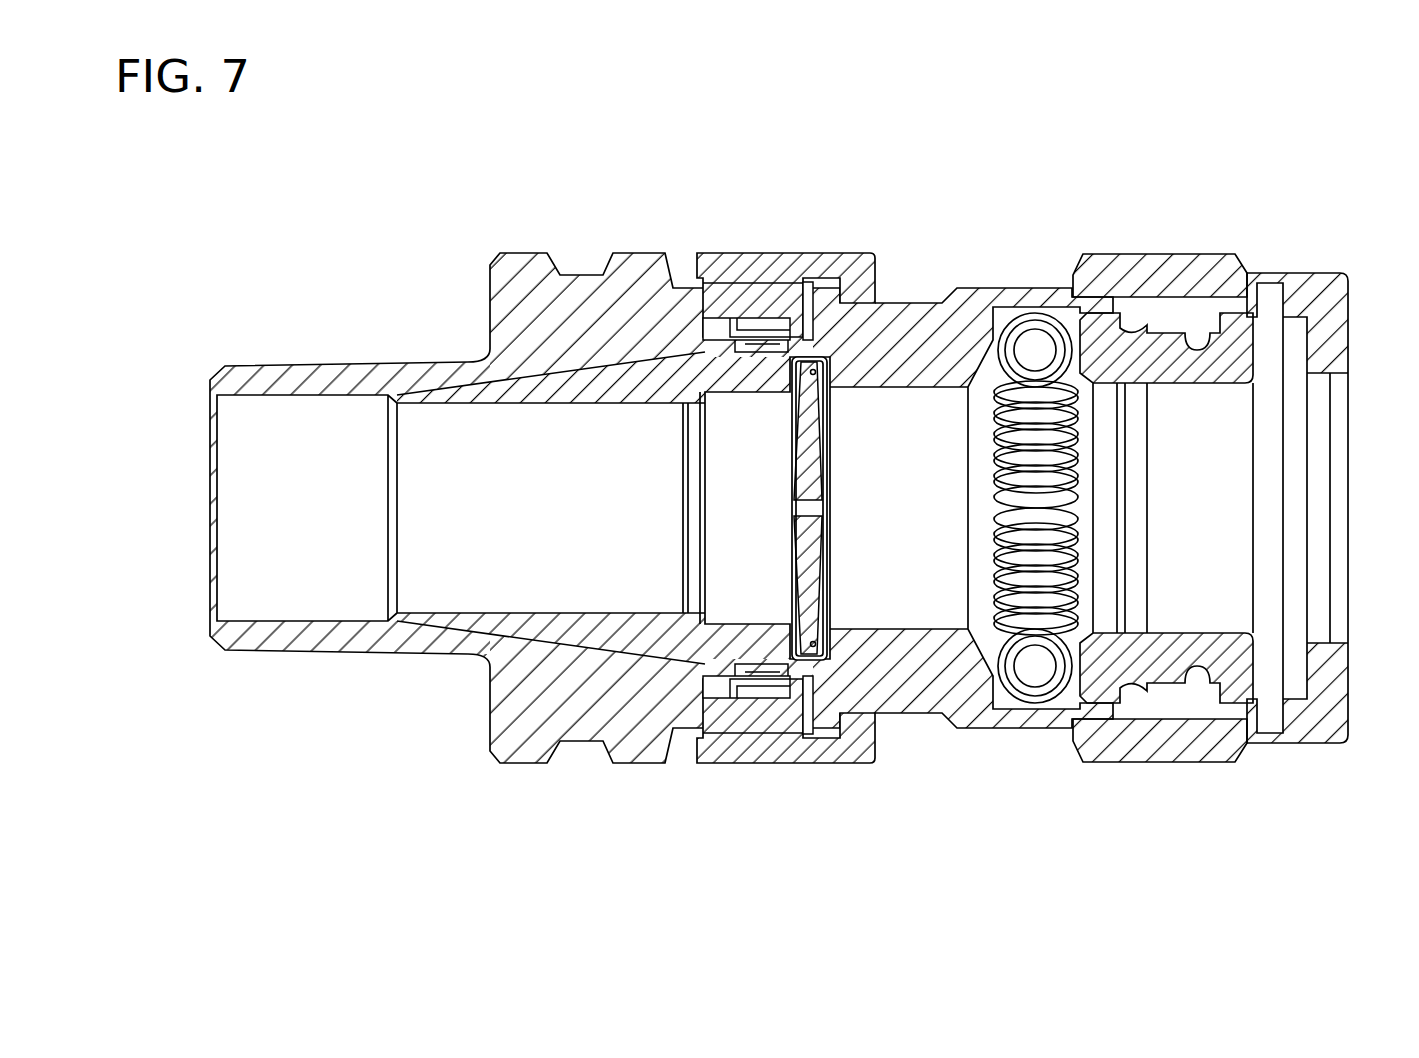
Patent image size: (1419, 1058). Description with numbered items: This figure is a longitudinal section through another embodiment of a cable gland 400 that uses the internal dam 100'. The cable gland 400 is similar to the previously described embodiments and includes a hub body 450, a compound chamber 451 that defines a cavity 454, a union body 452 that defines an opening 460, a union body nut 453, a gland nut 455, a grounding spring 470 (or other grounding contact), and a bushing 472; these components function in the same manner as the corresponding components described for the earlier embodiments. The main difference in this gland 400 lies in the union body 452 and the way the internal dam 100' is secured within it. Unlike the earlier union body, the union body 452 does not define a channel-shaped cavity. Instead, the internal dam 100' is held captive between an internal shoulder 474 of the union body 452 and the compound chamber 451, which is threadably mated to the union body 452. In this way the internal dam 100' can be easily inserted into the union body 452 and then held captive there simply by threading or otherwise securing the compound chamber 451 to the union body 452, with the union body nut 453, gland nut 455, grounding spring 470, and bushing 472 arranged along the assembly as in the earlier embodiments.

The cable gland 400 is at (916, 172).
The hub body 450 is at (288, 653).
The compound chamber 451 is at (563, 633).
The union body 452 is at (1042, 733).
The union body nut 453 is at (848, 764).
The cavity 454 is at (460, 548).
The gland nut 455 is at (1190, 263).
The opening 460 is at (732, 667).
The grounding spring 470 is at (1040, 325).
The bushing 472 is at (1227, 330).
The internal shoulder 474 is at (834, 636).
The internal dam 100' is at (799, 593).